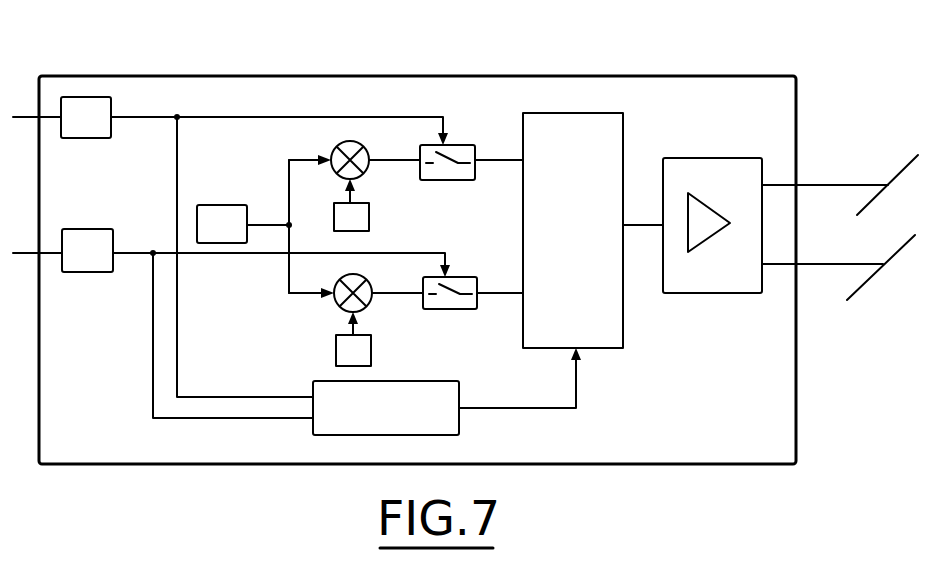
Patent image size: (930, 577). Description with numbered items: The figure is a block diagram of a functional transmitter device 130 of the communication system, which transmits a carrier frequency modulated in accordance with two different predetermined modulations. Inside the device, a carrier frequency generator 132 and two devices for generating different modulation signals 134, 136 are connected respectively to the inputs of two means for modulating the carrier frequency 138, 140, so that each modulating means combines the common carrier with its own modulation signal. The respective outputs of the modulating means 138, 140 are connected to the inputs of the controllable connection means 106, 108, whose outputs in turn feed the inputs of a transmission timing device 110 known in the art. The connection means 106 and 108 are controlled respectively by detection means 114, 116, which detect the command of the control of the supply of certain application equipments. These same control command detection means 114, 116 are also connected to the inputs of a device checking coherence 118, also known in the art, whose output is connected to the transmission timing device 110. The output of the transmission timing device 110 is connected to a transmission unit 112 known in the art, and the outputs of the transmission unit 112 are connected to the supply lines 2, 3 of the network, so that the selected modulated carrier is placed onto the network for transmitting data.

The functional transmitter device 130 is at (660, 76).
The detection means 114 is at (88, 97).
The detection means 116 is at (86, 272).
The carrier frequency generator 132 is at (215, 205).
The means for modulating the carrier frequency 138 is at (336, 148).
The means for modulating the carrier frequency 140 is at (366, 281).
The modulation signal generating device 134 is at (369, 218).
The modulation signal generating device 136 is at (371, 353).
The controllable connection means 106 is at (443, 180).
The controllable connection means 108 is at (489, 268).
The transmission timing device 110 is at (623, 337).
The transmission unit 112 is at (687, 158).
The device checking coherence 118 is at (385, 436).
The supply line 2 is at (905, 165).
The supply line 3 is at (902, 245).